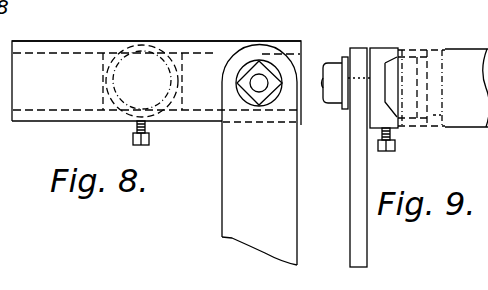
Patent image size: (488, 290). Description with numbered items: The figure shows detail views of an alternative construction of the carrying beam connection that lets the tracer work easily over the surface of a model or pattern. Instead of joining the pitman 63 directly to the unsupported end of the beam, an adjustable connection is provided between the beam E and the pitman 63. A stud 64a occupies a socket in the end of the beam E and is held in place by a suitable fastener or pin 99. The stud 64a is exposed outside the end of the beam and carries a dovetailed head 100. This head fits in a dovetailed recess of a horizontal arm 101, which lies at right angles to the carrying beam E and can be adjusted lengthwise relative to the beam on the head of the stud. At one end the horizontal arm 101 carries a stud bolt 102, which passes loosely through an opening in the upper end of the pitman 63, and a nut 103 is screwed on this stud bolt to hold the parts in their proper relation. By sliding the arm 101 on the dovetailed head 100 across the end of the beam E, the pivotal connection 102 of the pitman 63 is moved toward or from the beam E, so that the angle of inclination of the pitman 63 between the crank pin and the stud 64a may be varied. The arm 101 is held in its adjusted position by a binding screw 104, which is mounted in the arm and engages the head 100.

In FIG. 8, the pitman 63 is at (259, 155).
In FIG. 9, the pitman 63 is at (355, 210).
In FIG. 9, the stud 64a is at (437, 116).
In FIG. 9, the fastener or pin 99 is at (427, 52).
In FIG. 8, the dovetailed head 100 is at (77, 51).
In FIG. 9, the dovetailed head 100 is at (388, 65).
In FIG. 8, the horizontal arm 101 is at (207, 43).
In FIG. 9, the horizontal arm 101 is at (378, 47).
In FIG. 8, the stud bolt 102 is at (256, 77).
In FIG. 8, the nut 103 is at (273, 69).
In FIG. 9, the nut 103 is at (332, 103).
In FIG. 8, the binding screw 104 is at (150, 142).
In FIG. 9, the binding screw 104 is at (412, 156).
In FIG. 9, the carrying beam E is at (466, 88).